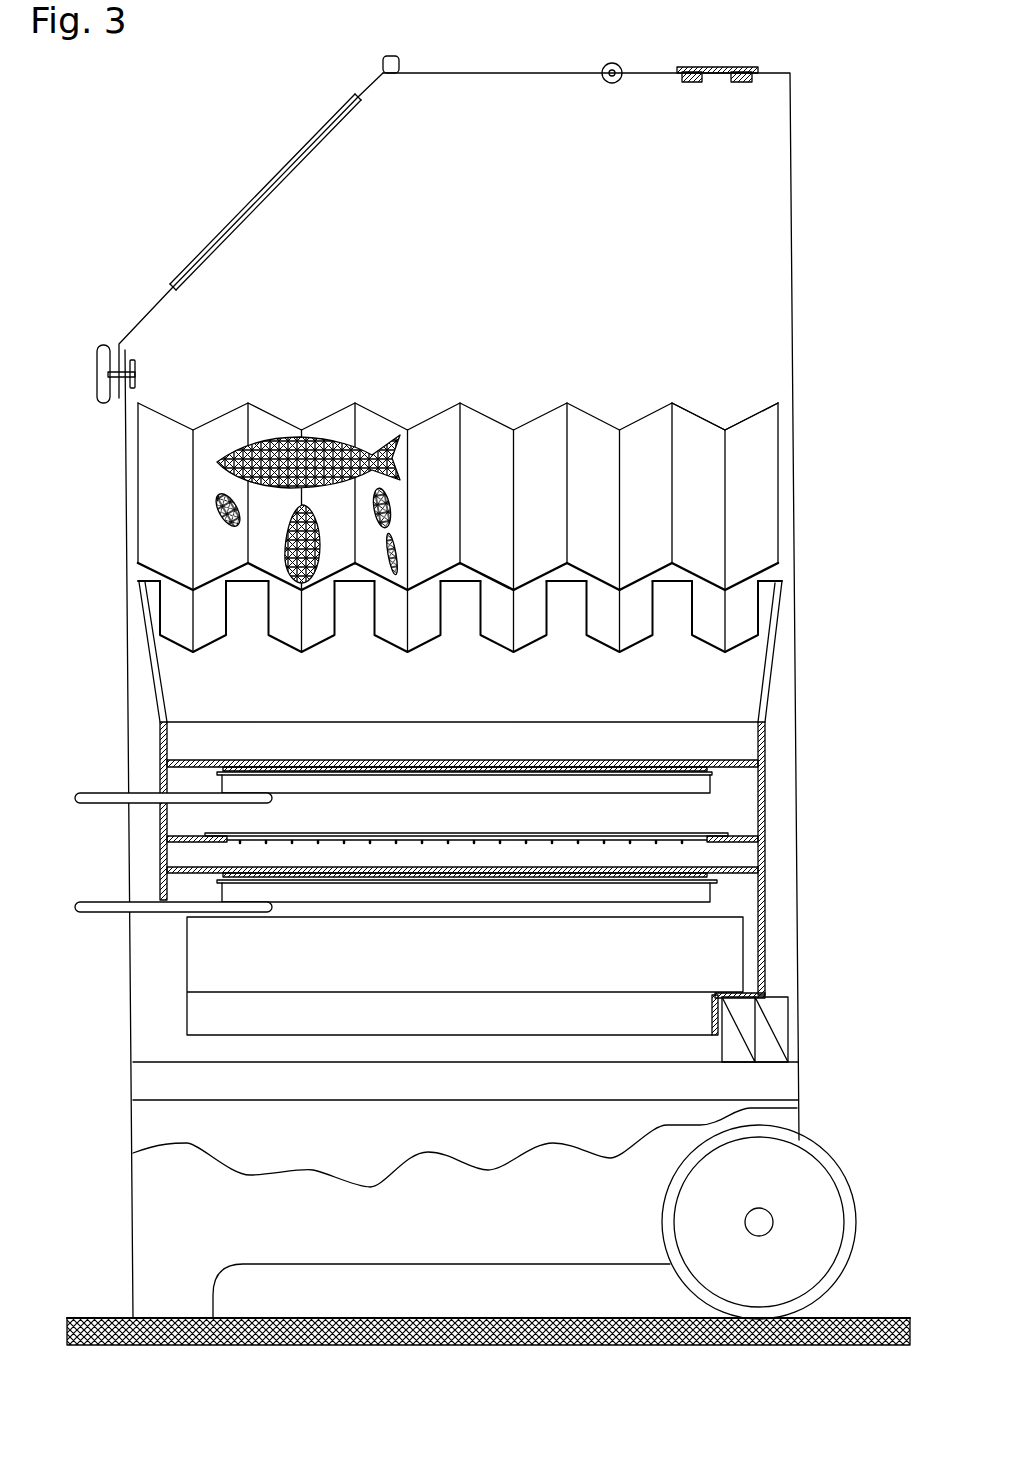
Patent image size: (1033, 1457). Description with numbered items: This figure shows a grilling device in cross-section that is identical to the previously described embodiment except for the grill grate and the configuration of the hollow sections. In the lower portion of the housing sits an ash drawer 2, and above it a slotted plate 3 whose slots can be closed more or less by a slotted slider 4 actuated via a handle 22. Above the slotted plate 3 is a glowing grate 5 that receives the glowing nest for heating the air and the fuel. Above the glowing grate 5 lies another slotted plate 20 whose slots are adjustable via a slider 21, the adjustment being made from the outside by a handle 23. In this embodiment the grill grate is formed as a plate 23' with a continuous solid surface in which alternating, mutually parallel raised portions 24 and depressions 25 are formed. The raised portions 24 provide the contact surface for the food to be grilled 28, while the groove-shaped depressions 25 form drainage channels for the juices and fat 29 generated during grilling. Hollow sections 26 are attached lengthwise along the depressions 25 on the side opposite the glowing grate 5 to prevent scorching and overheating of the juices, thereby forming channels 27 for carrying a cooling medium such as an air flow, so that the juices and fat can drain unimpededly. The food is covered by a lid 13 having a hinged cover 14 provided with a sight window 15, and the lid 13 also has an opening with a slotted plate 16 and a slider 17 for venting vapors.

The ash drawer 2 is at (207, 973).
The slotted plate 3 is at (728, 873).
The slotted slider 4 is at (663, 890).
The glowing grate 5 is at (677, 830).
The lid 13 is at (454, 146).
The hinged cover 14 is at (388, 56).
The sight window 15 is at (320, 131).
The slotted plate 16 is at (690, 71).
The slider 17 is at (720, 67).
The slotted plate 20 is at (660, 760).
The slider 21 is at (697, 781).
The handle 22 is at (78, 906).
The handle 23 is at (152, 836).
The plate 23' is at (519, 462).
The raised portions 24 is at (675, 443).
The depressions 25 is at (728, 520).
The hollow sections 26 is at (758, 587).
The channels 27 is at (748, 618).
The food to be grilled 28 is at (217, 470).
The fat 29 is at (288, 553).